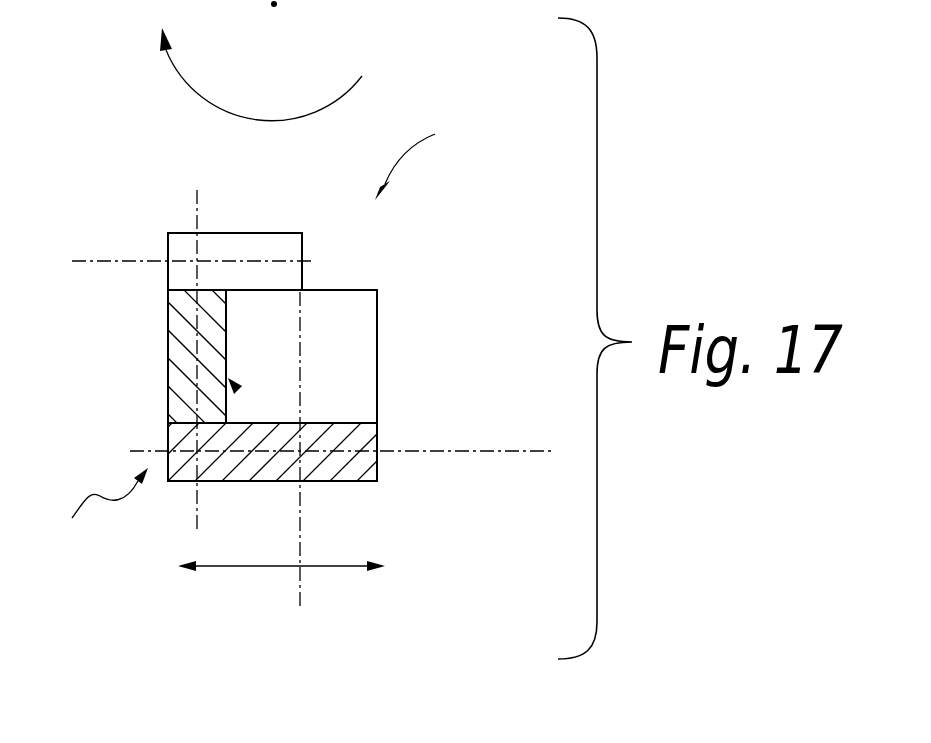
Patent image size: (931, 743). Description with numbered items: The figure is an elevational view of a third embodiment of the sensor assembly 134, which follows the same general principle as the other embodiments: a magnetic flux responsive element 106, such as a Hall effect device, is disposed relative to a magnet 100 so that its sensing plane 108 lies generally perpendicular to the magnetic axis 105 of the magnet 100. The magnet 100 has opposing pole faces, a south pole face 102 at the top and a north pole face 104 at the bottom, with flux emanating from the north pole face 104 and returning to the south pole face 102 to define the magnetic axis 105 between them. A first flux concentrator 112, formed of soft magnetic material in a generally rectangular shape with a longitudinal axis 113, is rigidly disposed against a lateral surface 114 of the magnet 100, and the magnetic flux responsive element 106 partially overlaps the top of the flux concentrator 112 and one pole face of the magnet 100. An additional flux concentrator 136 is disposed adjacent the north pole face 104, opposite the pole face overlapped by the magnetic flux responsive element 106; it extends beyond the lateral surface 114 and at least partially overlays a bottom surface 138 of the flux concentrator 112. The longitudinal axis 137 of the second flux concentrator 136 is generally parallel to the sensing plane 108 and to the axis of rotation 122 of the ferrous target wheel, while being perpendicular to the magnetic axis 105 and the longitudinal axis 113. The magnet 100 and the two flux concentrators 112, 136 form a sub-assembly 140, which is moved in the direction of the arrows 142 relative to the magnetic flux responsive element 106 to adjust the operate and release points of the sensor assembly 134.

The magnet 100 is at (378, 316).
The south pole face 102 is at (356, 289).
The north pole face 104 is at (355, 422).
The magnetic axis 105 is at (302, 596).
The magnetic flux responsive element 106 is at (259, 245).
The sensing plane 108 is at (86, 263).
The flux concentrator 112 is at (168, 336).
The longitudinal axis 113 is at (196, 200).
The lateral surface 114 is at (215, 436).
The axis of rotation 122 is at (277, 5).
The sensor assembly 134 is at (427, 157).
The additional flux concentrator 136 is at (365, 440).
The longitudinal axis 137 is at (495, 450).
The bottom surface 138 is at (238, 390).
The sub-assembly 140 is at (92, 509).
The arrows 142 is at (262, 567).